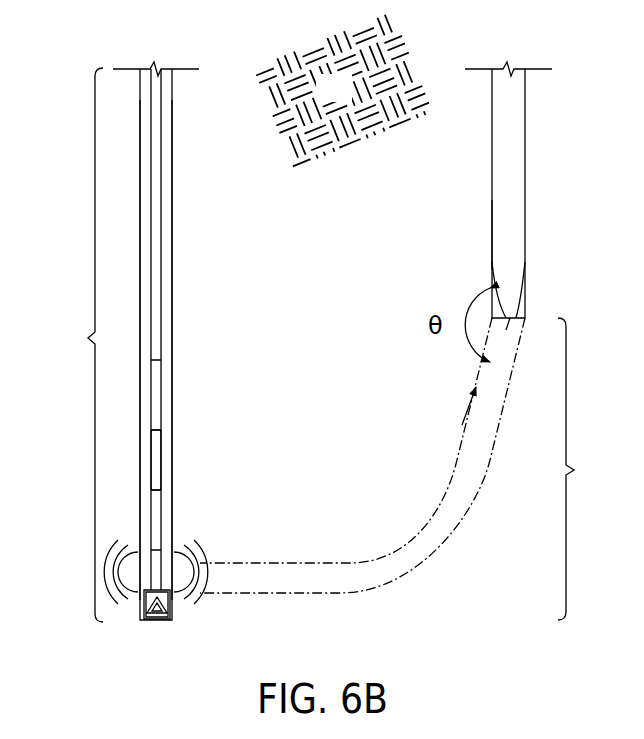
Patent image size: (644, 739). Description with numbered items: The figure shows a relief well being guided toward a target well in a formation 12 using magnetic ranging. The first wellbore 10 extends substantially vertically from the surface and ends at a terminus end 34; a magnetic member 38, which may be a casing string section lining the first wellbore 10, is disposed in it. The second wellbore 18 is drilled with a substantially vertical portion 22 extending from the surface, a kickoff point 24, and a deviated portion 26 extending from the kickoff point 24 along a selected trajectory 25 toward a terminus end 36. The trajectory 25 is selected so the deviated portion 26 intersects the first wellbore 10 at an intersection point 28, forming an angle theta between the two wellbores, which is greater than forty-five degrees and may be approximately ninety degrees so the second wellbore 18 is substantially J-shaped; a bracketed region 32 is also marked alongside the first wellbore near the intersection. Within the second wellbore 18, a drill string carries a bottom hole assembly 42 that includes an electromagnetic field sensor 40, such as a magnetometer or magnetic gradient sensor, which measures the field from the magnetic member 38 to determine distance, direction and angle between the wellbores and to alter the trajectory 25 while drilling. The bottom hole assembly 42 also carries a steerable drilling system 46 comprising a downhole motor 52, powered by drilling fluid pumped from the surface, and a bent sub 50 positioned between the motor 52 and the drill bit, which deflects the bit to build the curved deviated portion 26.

The first wellbore 10 is at (540, 132).
The formation 12 is at (350, 101).
The second wellbore 18 is at (172, 265).
The substantially vertical portion 22 is at (88, 338).
The kickoff point 24 is at (172, 598).
The trajectory 25 is at (463, 417).
The deviated portion 26 is at (430, 563).
The intersection point 28 is at (525, 270).
The build section 32 is at (574, 470).
The terminus end 34 is at (510, 320).
The terminus end 36 is at (492, 275).
The magnetic member 38 is at (492, 218).
The electromagnetic field sensor 40 is at (160, 572).
The bottom hole assembly 42 is at (175, 368).
The steerable drilling system 46 is at (175, 435).
The bent sub 50 is at (162, 513).
The downhole motor 52 is at (162, 466).